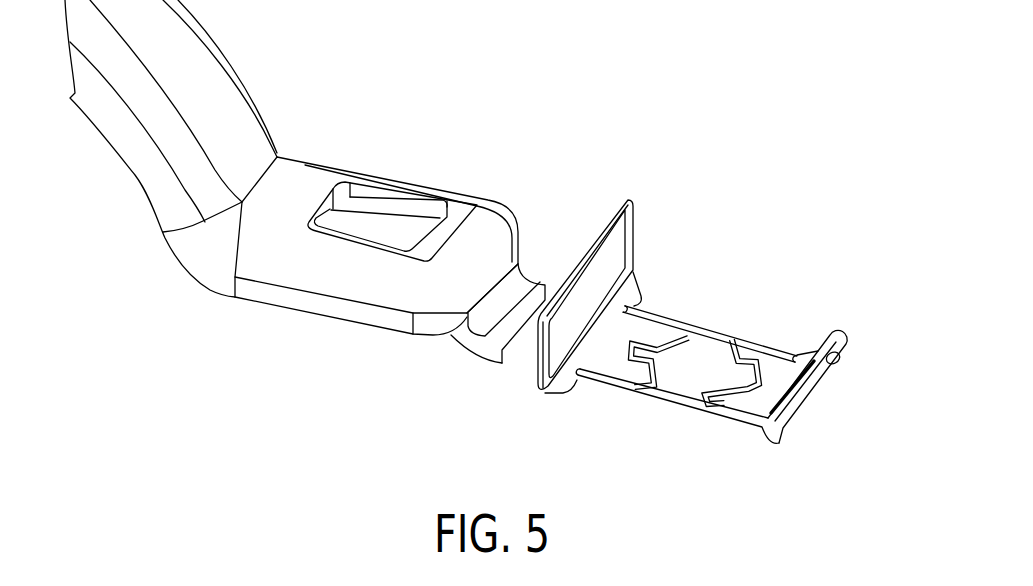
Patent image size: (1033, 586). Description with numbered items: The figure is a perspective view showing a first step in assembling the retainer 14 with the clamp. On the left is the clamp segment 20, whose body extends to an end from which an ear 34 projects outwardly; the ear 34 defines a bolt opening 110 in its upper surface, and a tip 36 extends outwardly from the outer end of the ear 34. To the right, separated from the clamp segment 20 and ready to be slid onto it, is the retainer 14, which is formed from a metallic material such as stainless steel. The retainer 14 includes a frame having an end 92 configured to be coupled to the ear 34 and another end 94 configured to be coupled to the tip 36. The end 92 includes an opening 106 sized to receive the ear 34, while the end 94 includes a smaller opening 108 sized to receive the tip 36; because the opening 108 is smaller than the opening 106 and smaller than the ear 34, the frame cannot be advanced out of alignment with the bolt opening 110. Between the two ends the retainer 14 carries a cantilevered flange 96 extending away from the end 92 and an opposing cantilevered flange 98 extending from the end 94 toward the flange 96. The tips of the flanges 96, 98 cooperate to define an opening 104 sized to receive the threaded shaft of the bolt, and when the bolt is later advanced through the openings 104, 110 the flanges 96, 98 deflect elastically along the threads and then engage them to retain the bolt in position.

The retainer 14 is at (830, 200).
The clamp segment 20 is at (227, 48).
The ear 34 is at (337, 157).
The tip 36 is at (478, 345).
The end of frame 92 is at (615, 202).
The end of frame 94 is at (783, 420).
The cantilevered flange 96 is at (632, 374).
The cantilevered flange 98 is at (726, 405).
The opening 104 is at (731, 330).
The opening 106 is at (632, 243).
The opening 108 is at (832, 389).
The bolt opening 110 is at (410, 203).